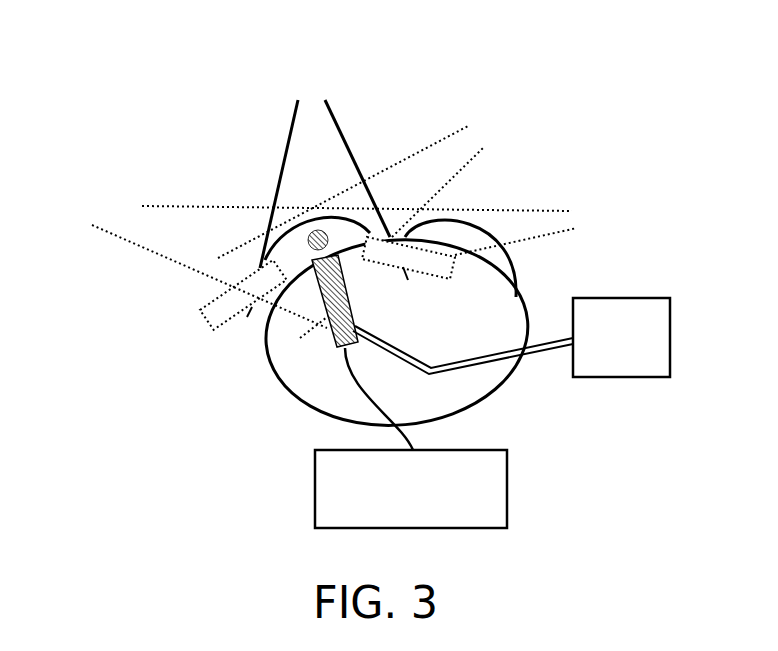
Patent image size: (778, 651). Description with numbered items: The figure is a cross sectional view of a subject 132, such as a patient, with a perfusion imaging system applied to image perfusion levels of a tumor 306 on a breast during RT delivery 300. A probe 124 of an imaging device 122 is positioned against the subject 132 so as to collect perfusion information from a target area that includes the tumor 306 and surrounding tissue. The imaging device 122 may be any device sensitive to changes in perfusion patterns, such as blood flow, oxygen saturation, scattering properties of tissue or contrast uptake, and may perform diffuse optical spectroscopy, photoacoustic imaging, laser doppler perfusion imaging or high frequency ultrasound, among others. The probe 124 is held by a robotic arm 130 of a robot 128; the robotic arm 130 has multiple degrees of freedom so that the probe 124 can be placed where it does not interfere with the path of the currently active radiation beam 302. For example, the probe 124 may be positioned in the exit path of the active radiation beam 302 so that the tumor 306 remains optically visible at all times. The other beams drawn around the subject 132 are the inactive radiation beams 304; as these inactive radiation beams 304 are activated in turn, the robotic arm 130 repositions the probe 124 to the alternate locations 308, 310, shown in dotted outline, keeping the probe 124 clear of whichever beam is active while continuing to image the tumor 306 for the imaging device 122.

The RT delivery 300 is at (130, 96).
The active radiation beam 302 is at (322, 134).
The inactive radiation beams 304 is at (126, 222).
The tumor 306 is at (304, 223).
The alternate location 308 is at (204, 322).
The alternate location 310 is at (444, 260).
The probe 124 is at (362, 297).
The subject 132 is at (277, 368).
The robotic arm 130 is at (548, 345).
The robot 128 is at (602, 362).
The imaging device 122 is at (391, 517).